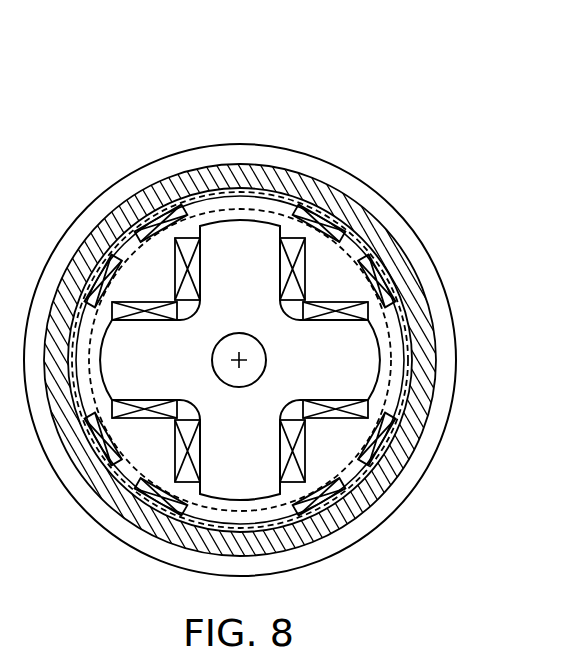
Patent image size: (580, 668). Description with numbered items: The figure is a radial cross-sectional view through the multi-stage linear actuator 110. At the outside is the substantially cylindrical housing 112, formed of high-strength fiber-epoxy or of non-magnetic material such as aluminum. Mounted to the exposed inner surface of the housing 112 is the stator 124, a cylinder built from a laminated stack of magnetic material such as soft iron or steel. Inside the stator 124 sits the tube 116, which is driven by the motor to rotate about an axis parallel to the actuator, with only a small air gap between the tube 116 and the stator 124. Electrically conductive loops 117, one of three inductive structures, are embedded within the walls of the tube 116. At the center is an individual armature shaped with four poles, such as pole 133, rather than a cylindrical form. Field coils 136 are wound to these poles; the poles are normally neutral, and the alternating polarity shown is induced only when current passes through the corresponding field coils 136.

The multi-stage linear actuator 110 is at (209, 116).
The housing 112 is at (452, 409).
The stator 124 is at (378, 230).
The electrically conductive loops 117 is at (381, 288).
The tube 116 is at (132, 243).
The pole 133 is at (256, 258).
The field coils 136 is at (187, 453).